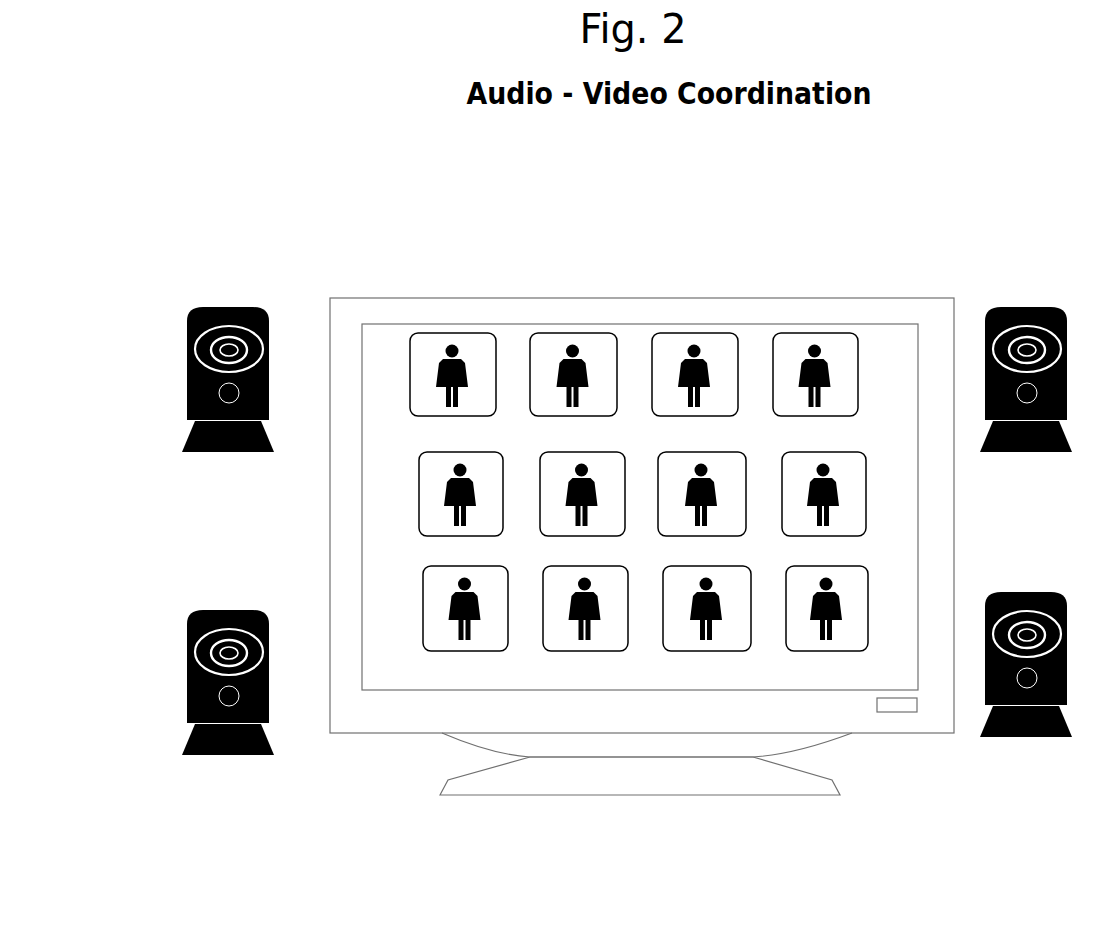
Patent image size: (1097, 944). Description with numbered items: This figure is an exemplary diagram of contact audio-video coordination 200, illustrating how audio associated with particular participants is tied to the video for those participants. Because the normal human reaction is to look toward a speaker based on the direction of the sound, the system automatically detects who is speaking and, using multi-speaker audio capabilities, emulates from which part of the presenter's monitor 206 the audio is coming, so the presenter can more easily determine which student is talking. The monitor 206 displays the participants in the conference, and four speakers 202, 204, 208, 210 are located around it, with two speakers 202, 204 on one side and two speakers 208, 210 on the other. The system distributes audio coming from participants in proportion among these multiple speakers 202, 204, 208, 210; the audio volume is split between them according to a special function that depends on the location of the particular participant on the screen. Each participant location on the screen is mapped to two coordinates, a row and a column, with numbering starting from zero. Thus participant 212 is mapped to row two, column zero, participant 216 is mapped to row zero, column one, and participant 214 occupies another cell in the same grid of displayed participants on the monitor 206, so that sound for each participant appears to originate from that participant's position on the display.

The contact audio-video coordination 200 is at (735, 200).
The speaker 202 is at (223, 300).
The speaker 204 is at (223, 605).
The monitor 206 is at (551, 298).
The speaker 208 is at (1023, 298).
The speaker 210 is at (1023, 583).
The participant 212 is at (488, 637).
The participant video cell 214 is at (473, 513).
The participant 216 is at (605, 405).